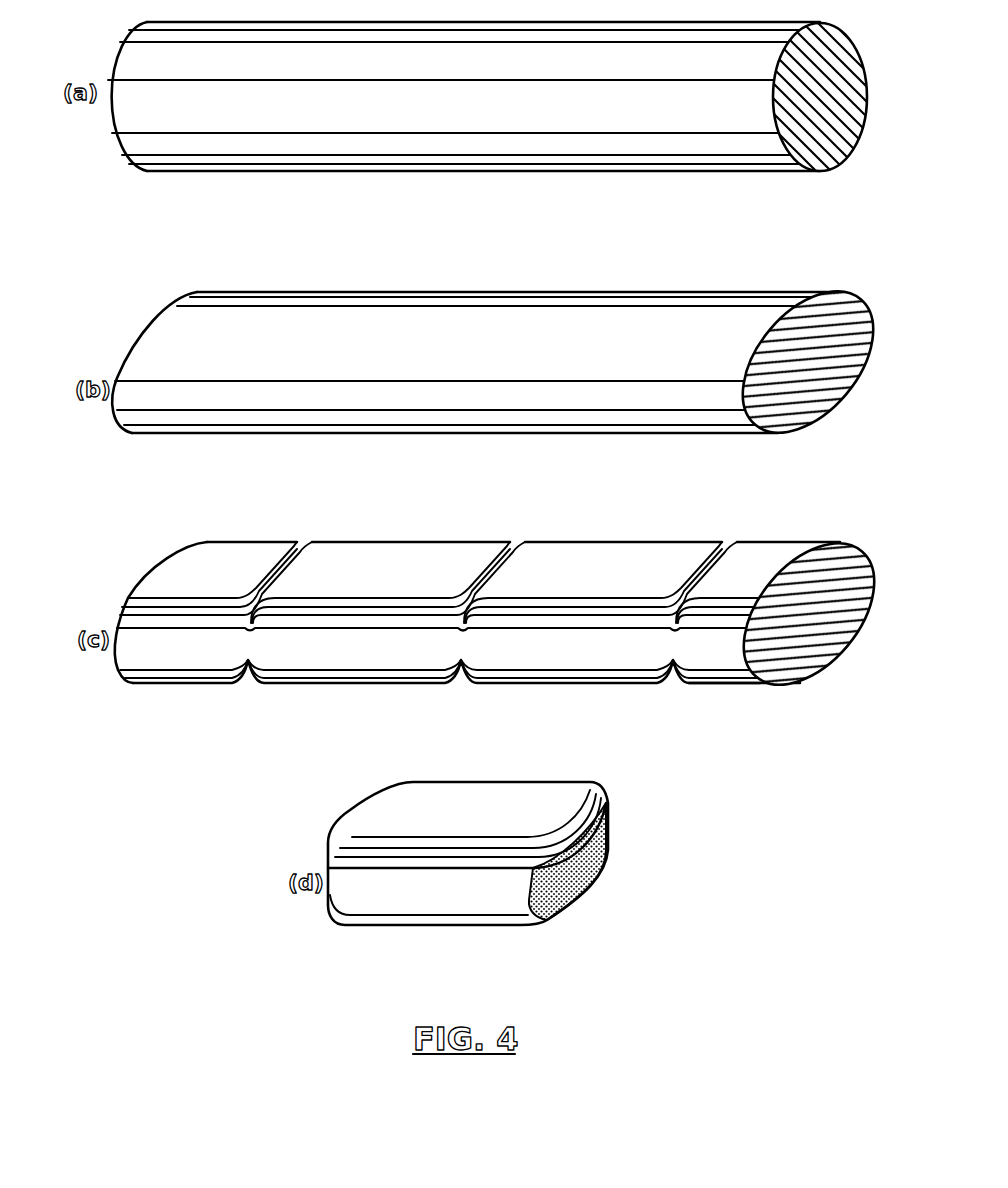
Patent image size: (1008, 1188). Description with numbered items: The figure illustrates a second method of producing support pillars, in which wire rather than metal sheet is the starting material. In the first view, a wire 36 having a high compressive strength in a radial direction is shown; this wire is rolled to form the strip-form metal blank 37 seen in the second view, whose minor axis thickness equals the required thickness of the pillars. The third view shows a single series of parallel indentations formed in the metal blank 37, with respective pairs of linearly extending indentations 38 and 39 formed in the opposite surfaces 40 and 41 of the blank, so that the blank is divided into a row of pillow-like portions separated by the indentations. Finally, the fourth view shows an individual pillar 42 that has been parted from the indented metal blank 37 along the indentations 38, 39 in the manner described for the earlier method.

The wire 36 is at (563, 143).
The strip-form metal blank 37 is at (353, 307).
The linearly extending indentations 38 is at (272, 585).
The linearly extending indentations 39 is at (253, 683).
The surface of the metal blank 40 is at (755, 575).
The surface of the metal blank 41 is at (735, 688).
The pillar 42 is at (468, 773).